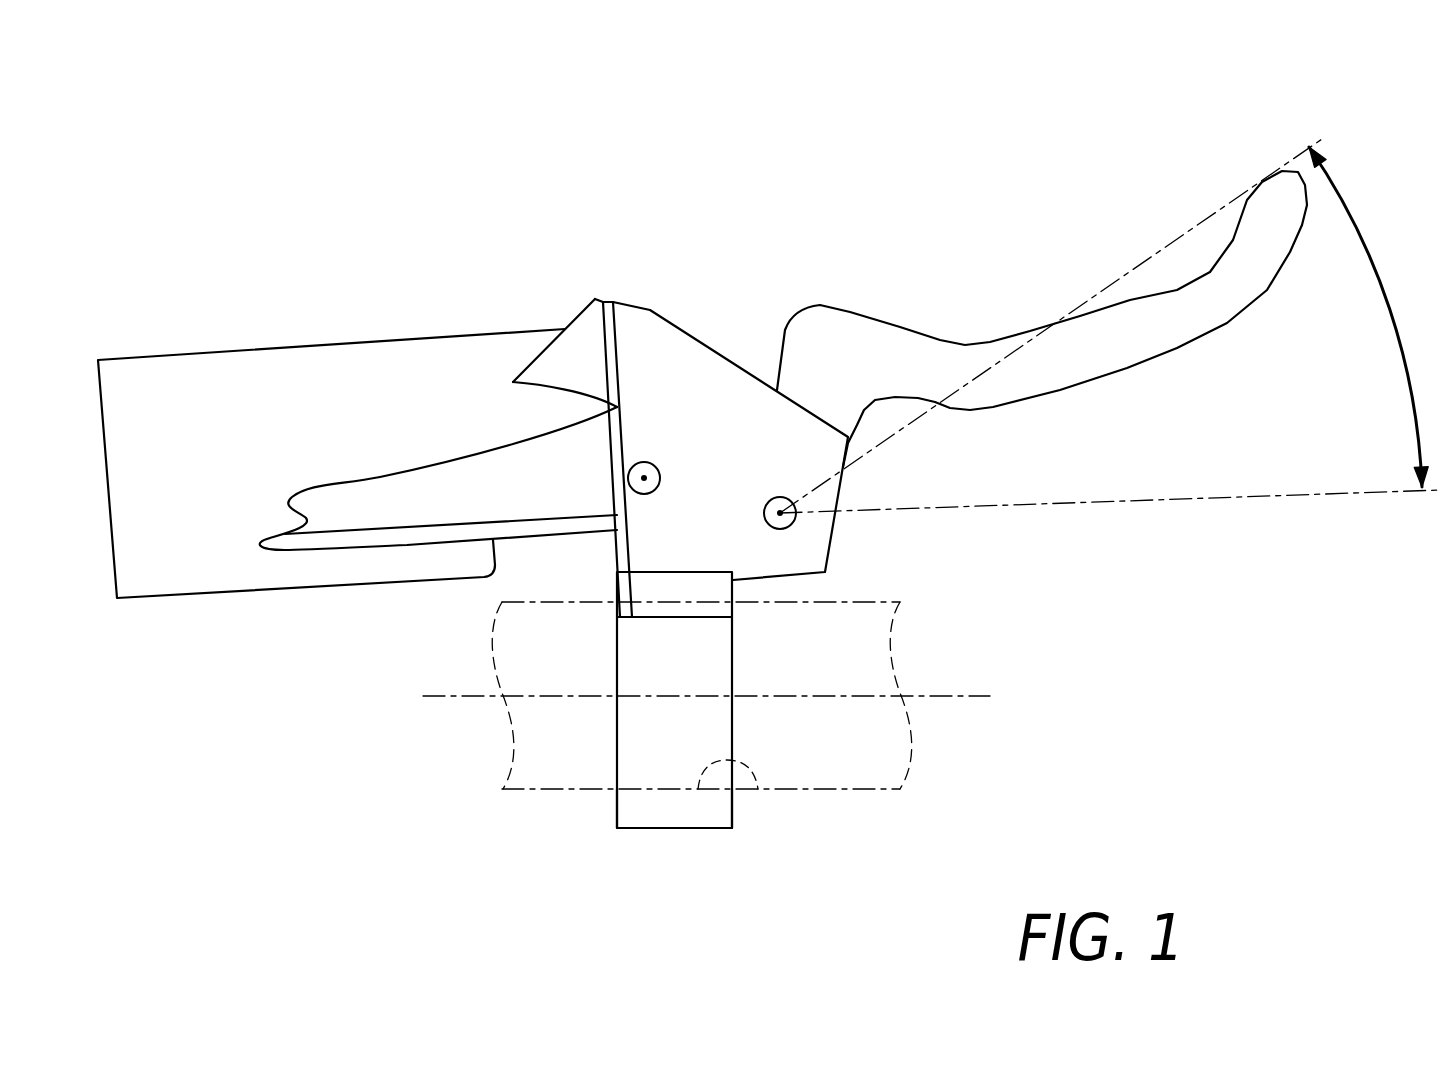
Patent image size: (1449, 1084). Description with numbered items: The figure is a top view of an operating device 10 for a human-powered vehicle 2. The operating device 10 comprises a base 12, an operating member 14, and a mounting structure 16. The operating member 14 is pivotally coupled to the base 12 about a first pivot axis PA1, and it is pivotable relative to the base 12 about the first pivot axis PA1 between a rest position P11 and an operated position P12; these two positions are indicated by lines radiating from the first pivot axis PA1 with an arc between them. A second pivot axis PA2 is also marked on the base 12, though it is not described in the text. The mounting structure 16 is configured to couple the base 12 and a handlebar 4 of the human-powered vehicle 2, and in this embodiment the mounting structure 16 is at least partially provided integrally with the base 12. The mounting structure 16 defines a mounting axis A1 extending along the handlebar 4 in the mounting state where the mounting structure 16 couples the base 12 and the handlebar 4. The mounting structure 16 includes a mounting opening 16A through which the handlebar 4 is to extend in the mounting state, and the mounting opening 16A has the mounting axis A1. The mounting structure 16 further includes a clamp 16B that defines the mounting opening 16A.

The human-powered vehicle 2 is at (790, 138).
The operating device 10 is at (563, 190).
The base 12 is at (342, 328).
The operating member 14 is at (905, 320).
The mounting structure 16 is at (670, 834).
The mounting opening 16A is at (758, 789).
The clamp 16B is at (637, 808).
The handlebar 4 is at (878, 794).
The mounting axis A1 is at (937, 696).
The first pivot axis PA1 is at (788, 522).
The second pivot axis PA2 is at (650, 463).
The rest position P11 is at (1304, 138).
The operated position P12 is at (1392, 494).